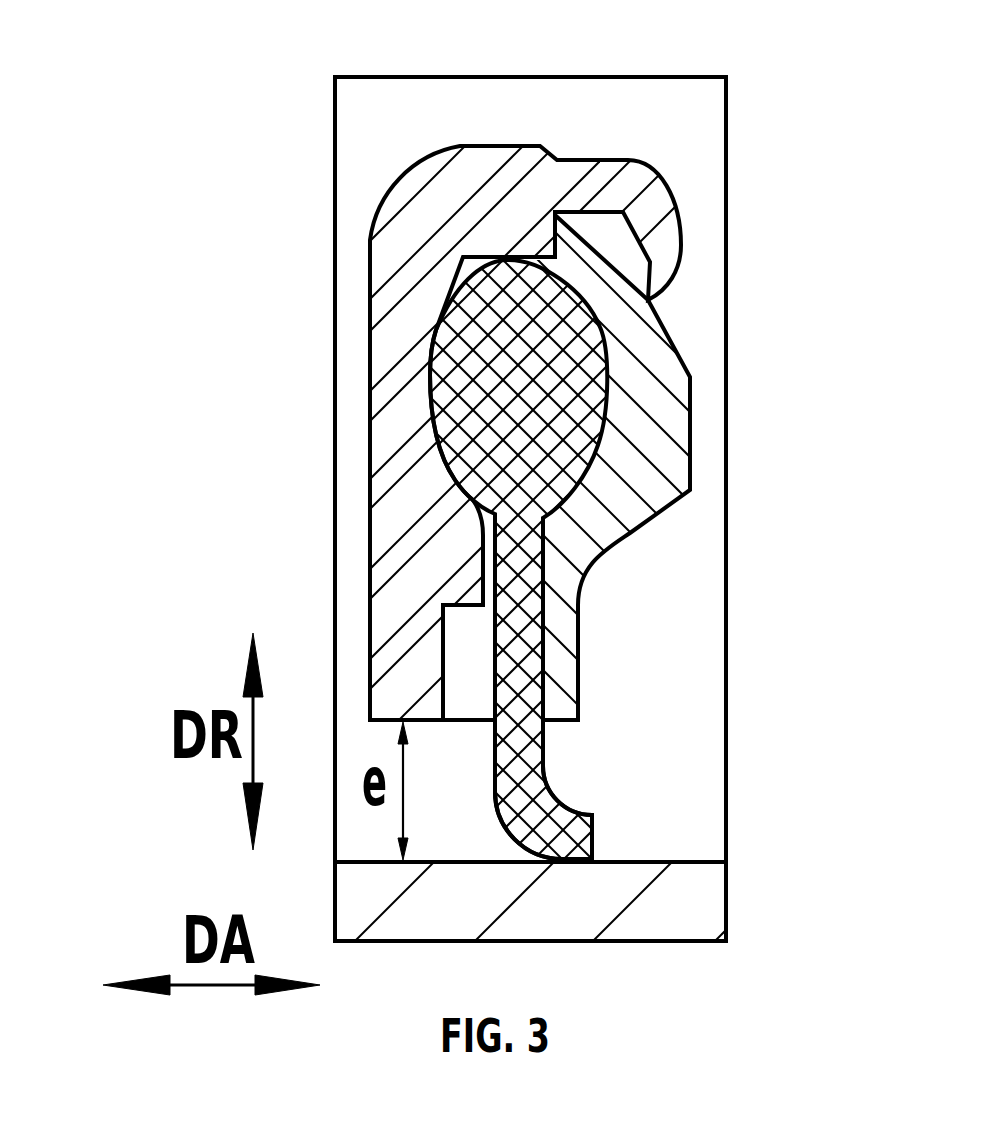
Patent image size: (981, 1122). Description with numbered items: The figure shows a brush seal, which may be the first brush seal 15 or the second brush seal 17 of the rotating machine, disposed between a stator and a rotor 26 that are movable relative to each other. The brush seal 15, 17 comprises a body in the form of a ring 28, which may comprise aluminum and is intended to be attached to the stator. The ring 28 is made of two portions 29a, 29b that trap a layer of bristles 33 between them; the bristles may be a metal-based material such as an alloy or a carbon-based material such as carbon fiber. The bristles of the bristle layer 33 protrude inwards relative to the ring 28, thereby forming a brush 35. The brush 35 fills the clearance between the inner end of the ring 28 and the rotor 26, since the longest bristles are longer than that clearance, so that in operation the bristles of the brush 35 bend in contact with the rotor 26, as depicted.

The first brush seal 15 is at (445, 509).
The second brush seal 17 is at (364, 306).
The rotor 26 is at (687, 900).
The ring 28 is at (490, 500).
The first portion 29a is at (397, 540).
The second portion 29b is at (643, 352).
The bristle layer 33 is at (518, 647).
The brush 35 is at (543, 773).